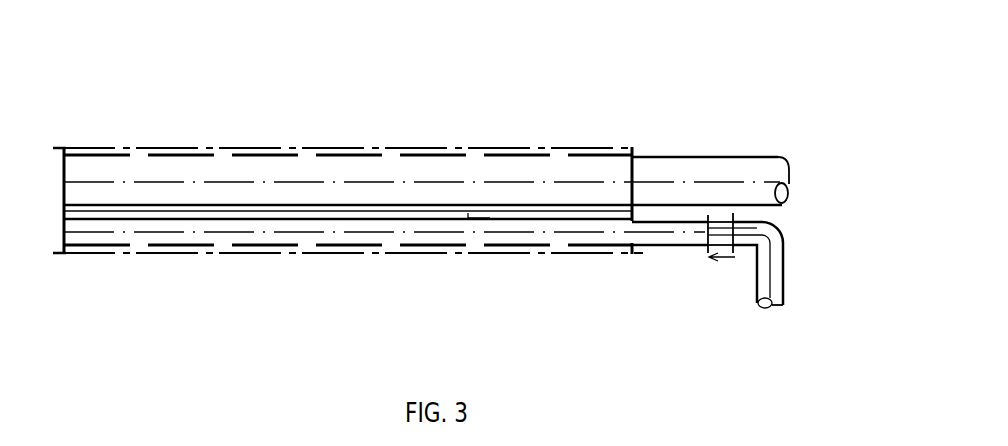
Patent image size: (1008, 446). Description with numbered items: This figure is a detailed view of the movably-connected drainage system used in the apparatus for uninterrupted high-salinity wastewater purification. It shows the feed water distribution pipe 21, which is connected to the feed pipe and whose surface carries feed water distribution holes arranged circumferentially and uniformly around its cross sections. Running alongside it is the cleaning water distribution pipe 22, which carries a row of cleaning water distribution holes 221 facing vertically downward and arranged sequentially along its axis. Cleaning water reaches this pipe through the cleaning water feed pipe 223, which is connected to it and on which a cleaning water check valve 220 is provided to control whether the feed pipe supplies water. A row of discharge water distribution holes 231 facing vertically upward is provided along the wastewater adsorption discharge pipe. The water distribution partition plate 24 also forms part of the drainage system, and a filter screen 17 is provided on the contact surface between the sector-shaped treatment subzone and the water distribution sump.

The filter screen 17 is at (351, 130).
The feed water distribution pipe 21 is at (405, 157).
The cleaning water distribution pipe 22 is at (386, 283).
The water distribution partition plate 24 is at (145, 212).
The cleaning water check valve 220 is at (712, 245).
The cleaning water distribution holes 221 is at (310, 245).
The cleaning water feed pipe 223 is at (784, 275).
The discharge water distribution holes 231 is at (310, 150).